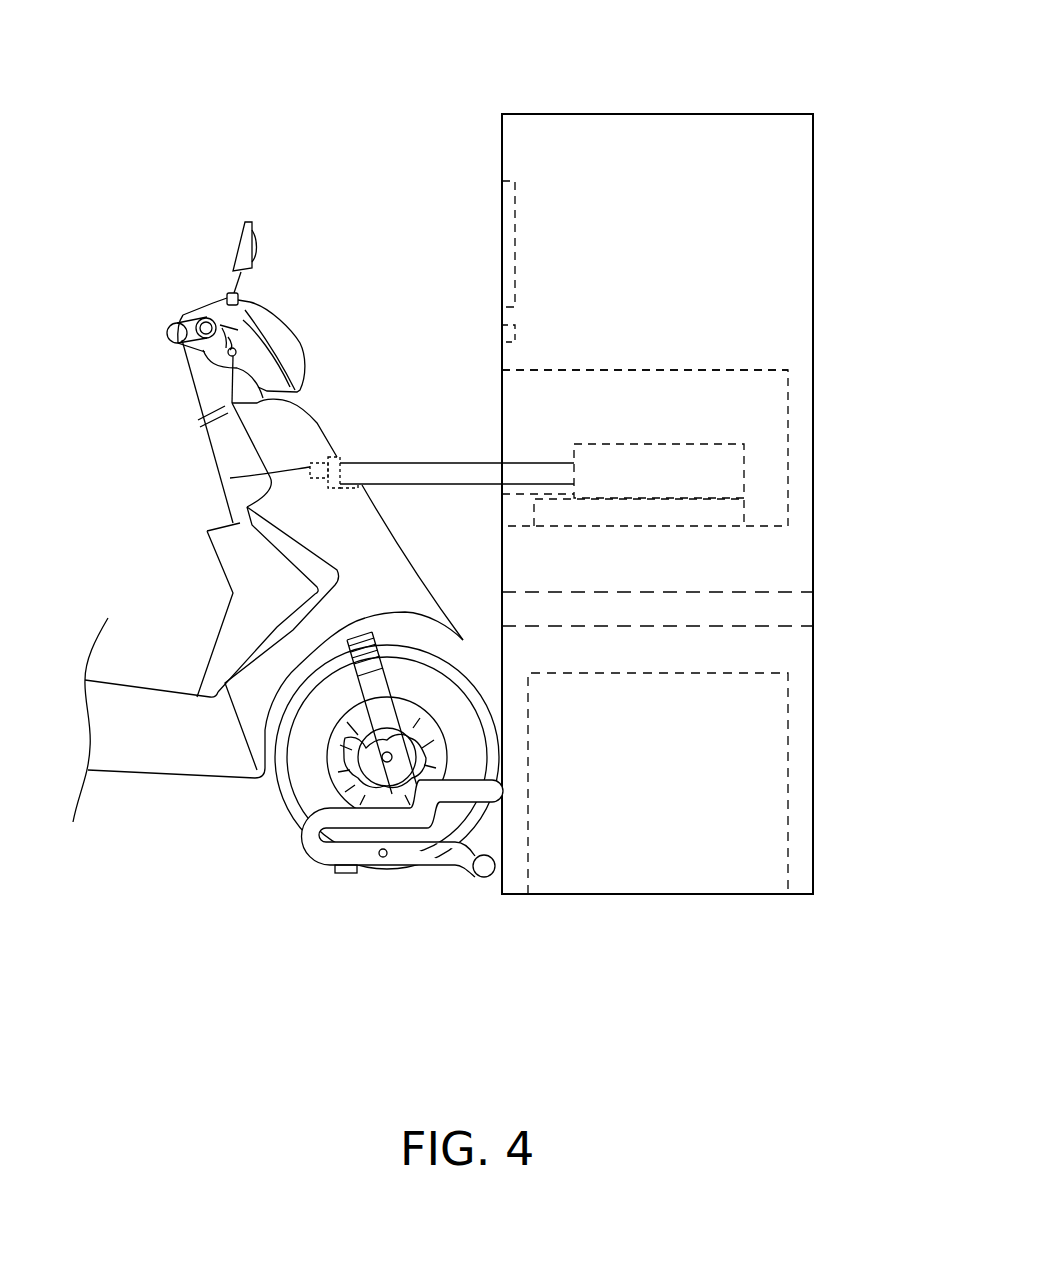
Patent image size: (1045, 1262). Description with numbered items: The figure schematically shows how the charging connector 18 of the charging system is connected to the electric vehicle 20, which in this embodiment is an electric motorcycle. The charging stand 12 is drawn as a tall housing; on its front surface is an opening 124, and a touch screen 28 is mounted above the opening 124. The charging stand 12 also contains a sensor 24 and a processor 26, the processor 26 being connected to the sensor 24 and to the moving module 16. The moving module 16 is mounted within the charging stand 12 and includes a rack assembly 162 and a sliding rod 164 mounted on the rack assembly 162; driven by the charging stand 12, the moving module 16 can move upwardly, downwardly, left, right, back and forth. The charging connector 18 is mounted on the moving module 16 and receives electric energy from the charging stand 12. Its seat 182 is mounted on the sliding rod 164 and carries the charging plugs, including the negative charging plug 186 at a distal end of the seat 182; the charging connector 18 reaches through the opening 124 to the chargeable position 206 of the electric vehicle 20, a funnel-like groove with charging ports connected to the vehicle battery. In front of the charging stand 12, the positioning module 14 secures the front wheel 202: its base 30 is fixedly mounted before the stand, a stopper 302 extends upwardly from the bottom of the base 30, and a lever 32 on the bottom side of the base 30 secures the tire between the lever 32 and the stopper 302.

The charging stand 12 is at (637, 113).
The touch screen 28 is at (507, 200).
The sensor 24 is at (504, 331).
The opening 124 is at (565, 405).
The moving module 16 is at (642, 438).
The sliding rod 164 is at (680, 456).
The rack assembly 162 is at (718, 516).
The processor 26 is at (662, 855).
The charging connector 18 is at (340, 457).
The seat 182 is at (339, 458).
The chargeable position 206 is at (322, 461).
The negative charging plug 186 is at (230, 478).
The electric vehicle 20 is at (286, 545).
The front wheel 202 is at (308, 782).
The positioning module 14 is at (400, 872).
The base 30 is at (459, 872).
The stopper 302 is at (467, 792).
The lever 32 is at (348, 868).